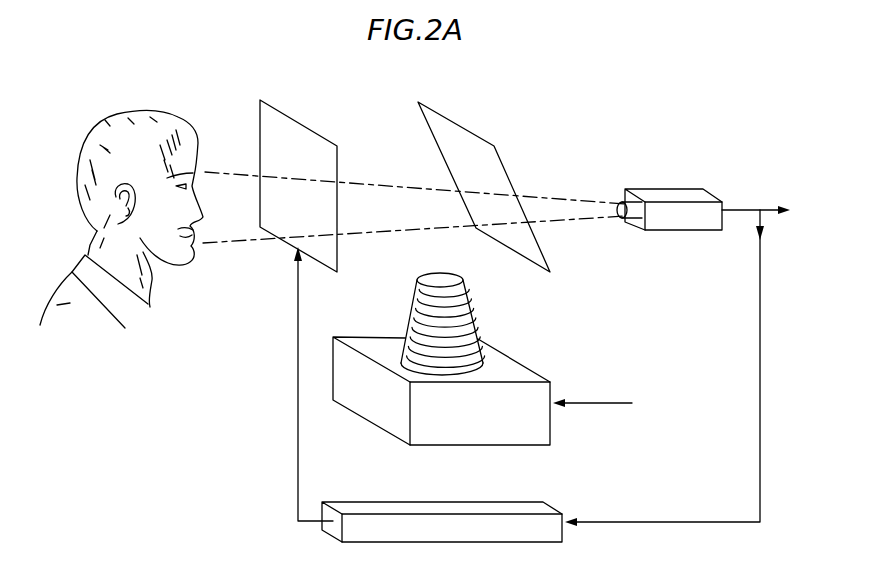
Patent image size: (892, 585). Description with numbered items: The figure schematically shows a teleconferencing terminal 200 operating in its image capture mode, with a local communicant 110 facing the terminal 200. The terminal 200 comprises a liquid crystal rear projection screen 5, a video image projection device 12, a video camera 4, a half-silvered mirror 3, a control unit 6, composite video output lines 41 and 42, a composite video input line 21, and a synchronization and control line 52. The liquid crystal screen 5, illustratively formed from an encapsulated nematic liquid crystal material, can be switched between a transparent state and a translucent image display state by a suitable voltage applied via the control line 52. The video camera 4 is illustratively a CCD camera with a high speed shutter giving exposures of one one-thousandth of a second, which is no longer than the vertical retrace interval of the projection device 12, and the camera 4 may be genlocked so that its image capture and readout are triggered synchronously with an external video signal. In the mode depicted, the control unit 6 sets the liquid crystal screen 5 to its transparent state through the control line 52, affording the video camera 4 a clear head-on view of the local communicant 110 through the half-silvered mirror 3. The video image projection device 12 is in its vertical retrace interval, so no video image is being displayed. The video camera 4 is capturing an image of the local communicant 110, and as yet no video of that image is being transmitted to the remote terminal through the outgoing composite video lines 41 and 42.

The local communicant 110 is at (109, 106).
The liquid crystal rear projection screen 5 is at (270, 131).
The half-silvered mirror 3 is at (475, 133).
The video camera 4 is at (668, 192).
The composite video output line 41 is at (746, 209).
The composite video output line 42 is at (760, 333).
The terminal 200 is at (611, 140).
The video image projection device 12 is at (512, 372).
The composite video input line 21 is at (606, 403).
The control unit 6 is at (366, 507).
The synchronization and control line 52 is at (298, 375).